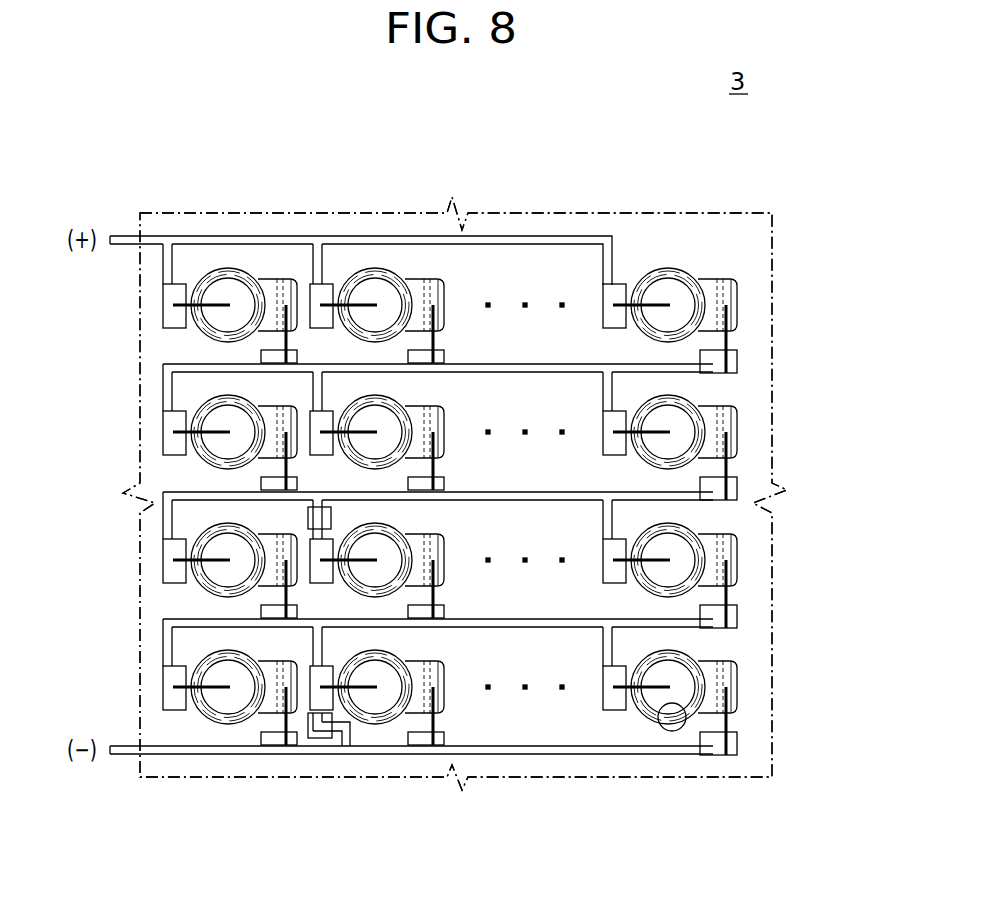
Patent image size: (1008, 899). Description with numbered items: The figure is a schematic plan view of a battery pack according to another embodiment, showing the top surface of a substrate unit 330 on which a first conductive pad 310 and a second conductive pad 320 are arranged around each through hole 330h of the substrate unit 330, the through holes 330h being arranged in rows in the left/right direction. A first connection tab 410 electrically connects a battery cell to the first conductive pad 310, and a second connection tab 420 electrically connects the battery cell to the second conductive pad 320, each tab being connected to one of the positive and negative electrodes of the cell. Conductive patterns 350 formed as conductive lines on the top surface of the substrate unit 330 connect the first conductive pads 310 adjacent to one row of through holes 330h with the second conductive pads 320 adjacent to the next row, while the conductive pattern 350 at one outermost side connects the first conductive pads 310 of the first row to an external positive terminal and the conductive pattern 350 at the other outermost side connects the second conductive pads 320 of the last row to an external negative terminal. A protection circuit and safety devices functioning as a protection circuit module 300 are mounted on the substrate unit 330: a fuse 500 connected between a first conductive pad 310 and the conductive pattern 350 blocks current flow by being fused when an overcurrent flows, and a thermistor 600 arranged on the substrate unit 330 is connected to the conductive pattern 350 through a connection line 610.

The protection circuit module 300 is at (793, 246).
The first conductive pad 310 is at (610, 710).
The second conductive pad 320 is at (724, 757).
The substrate unit 330 is at (745, 394).
The through hole 330h is at (688, 723).
The conductive pattern 350 is at (228, 244).
The first connection tab 410 is at (652, 722).
The second connection tab 420 is at (730, 722).
The fuse 500 is at (318, 517).
The thermistor 600 is at (322, 738).
The connection line 610 is at (350, 738).